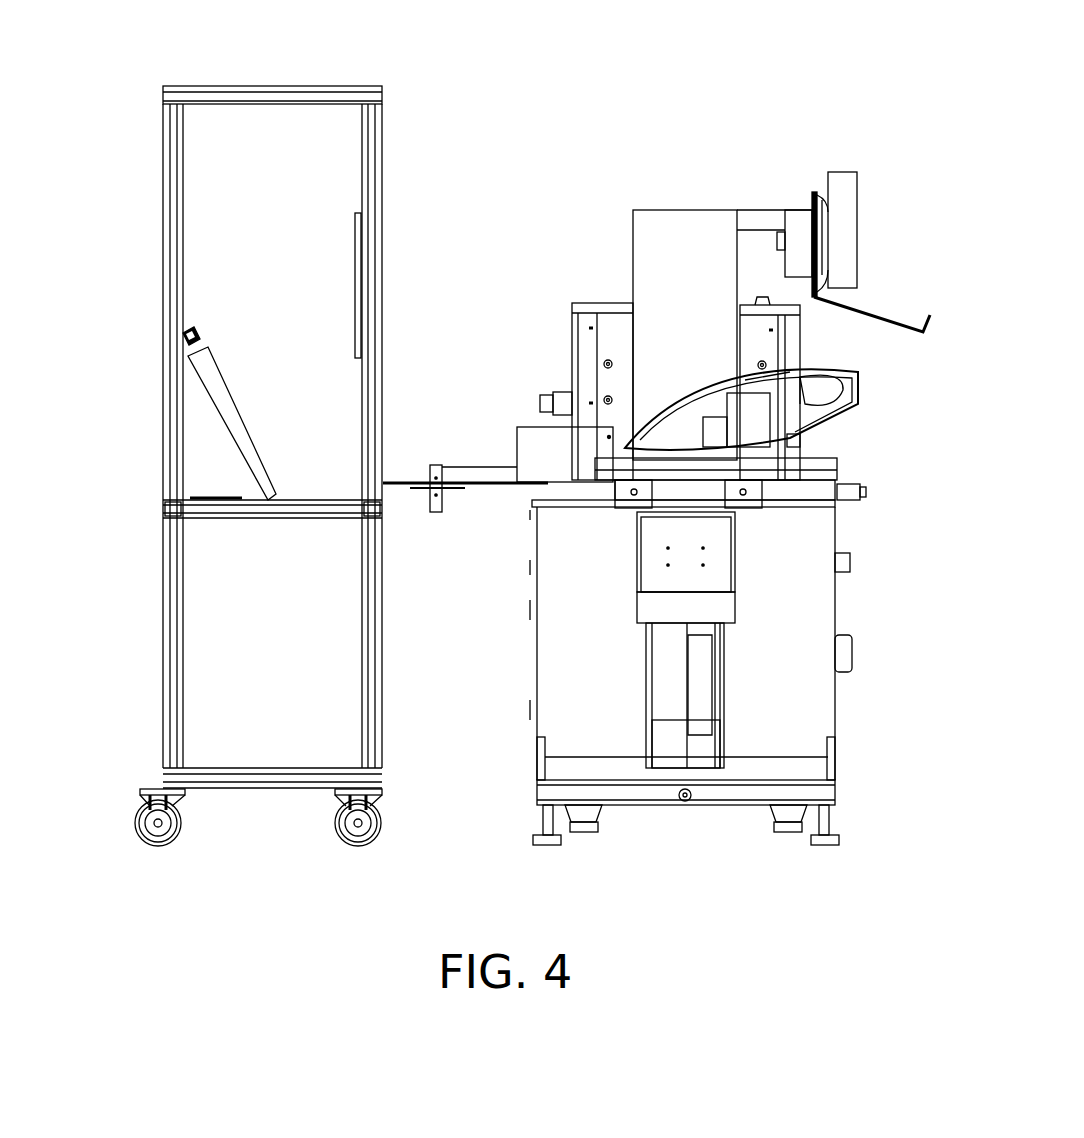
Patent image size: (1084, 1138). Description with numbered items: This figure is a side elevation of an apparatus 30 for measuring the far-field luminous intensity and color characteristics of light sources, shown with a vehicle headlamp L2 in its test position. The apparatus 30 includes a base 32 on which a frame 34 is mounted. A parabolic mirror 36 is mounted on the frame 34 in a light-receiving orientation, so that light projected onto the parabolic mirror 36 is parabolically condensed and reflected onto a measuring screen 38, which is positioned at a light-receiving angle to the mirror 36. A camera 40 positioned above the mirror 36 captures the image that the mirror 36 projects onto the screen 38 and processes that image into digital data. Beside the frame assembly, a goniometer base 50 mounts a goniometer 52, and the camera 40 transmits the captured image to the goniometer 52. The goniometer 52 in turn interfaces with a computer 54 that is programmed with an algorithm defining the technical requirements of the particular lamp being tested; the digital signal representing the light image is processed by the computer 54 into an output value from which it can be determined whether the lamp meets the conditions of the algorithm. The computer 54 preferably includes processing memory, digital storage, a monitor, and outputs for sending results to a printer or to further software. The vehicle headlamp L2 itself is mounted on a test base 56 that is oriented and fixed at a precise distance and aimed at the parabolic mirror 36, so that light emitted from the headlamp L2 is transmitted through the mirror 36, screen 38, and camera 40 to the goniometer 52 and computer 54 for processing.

The apparatus 30 is at (113, 180).
The base 32 is at (165, 585).
The frame 34 is at (383, 108).
The parabolic mirror 36 is at (231, 418).
The measuring screen 38 is at (358, 256).
The camera 40 is at (188, 328).
The goniometer base 50 is at (793, 685).
The goniometer 52 is at (705, 222).
The computer 54 is at (845, 178).
The test base 56 is at (820, 470).
The vehicle headlamp L2 is at (797, 425).